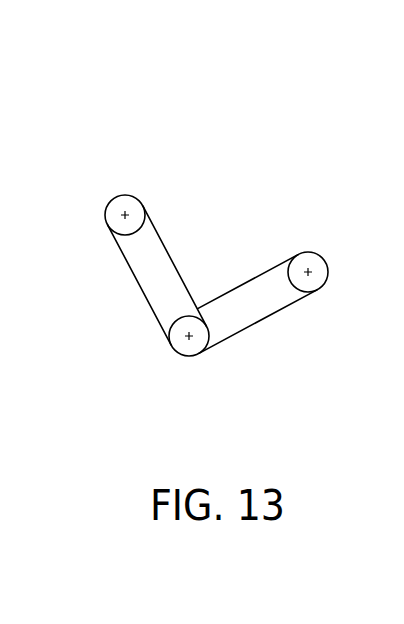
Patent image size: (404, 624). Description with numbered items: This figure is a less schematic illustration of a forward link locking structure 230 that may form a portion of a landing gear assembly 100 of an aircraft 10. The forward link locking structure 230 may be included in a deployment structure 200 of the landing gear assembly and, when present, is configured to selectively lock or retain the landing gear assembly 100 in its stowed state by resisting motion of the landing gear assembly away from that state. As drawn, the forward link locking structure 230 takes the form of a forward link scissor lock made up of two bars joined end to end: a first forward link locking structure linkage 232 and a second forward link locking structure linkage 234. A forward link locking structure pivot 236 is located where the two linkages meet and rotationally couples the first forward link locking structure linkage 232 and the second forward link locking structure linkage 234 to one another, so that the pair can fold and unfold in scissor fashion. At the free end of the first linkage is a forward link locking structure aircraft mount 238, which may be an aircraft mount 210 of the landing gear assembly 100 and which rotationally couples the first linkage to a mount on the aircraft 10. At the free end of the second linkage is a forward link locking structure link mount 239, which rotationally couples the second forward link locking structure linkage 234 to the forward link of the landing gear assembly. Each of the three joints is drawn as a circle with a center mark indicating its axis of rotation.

The aircraft 10 is at (282, 78).
The landing gear assembly 100 is at (263, 135).
The deployment structure 200 is at (218, 122).
The aircraft mount 210 is at (114, 191).
The forward link locking structure 230 is at (205, 272).
The first forward link locking structure linkage 232 is at (137, 257).
The second forward link locking structure linkage 234 is at (253, 307).
The forward link locking structure pivot 236 is at (190, 345).
The forward link locking structure aircraft mount 238 is at (117, 203).
The forward link locking structure link mount 239 is at (308, 260).